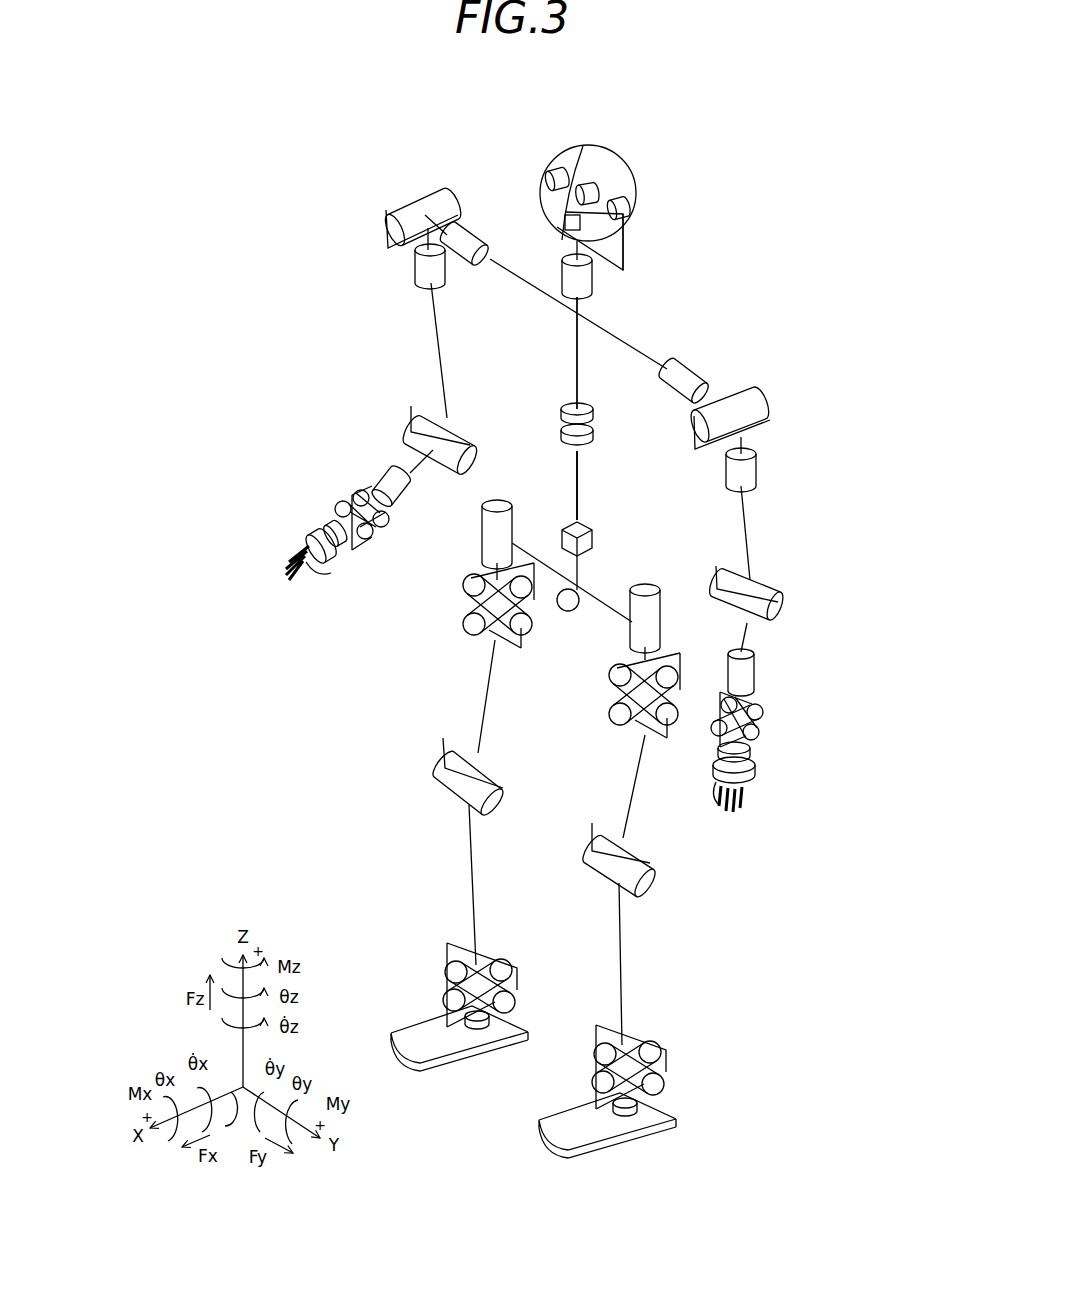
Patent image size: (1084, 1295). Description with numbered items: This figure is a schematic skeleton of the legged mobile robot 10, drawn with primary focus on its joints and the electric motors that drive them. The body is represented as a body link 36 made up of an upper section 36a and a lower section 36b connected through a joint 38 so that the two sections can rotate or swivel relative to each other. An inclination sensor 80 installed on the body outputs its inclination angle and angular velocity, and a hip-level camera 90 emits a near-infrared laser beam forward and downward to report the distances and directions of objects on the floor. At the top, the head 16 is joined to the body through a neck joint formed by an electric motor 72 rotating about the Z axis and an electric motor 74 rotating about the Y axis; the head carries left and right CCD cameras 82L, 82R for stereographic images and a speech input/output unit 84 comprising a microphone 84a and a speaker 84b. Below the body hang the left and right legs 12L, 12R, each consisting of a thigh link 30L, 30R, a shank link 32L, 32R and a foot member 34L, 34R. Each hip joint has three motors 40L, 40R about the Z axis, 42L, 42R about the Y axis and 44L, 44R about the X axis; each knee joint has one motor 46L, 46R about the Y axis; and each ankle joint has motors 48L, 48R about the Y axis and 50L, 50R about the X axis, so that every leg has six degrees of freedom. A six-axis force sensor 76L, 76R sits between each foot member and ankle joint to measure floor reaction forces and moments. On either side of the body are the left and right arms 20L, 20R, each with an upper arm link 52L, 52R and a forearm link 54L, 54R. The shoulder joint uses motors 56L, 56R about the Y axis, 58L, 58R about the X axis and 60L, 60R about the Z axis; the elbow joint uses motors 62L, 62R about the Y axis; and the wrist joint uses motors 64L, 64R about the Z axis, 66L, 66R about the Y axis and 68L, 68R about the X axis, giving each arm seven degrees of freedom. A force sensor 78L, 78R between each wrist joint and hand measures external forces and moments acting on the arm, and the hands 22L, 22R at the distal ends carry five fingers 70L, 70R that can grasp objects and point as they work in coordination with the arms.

The legged mobile robot 10 is at (718, 300).
The left leg 12L is at (682, 907).
The right leg 12R is at (412, 802).
The head 16 is at (558, 160).
The left arm 20L is at (790, 572).
The right arm 20R is at (410, 372).
The left hand 22L is at (754, 778).
The right hand 22R is at (330, 555).
The left thigh link 30L is at (632, 782).
The right thigh link 30R is at (486, 712).
The left shank link 32L is at (622, 955).
The right shank link 32R is at (470, 885).
The left foot member 34L is at (600, 1150).
The right foot member 34R is at (442, 1062).
The body link 36 is at (583, 474).
The upper section 36a is at (580, 392).
The lower section 36b is at (580, 512).
The joint 38 is at (598, 431).
The electric motor 40L is at (656, 612).
The electric motor 40R is at (506, 522).
The electric motor 42L is at (620, 678).
The electric motor 42R is at (474, 590).
The electric motor 44L is at (616, 716).
The electric motor 44R is at (472, 630).
The electric motor 46L is at (652, 883).
The electric motor 46R is at (500, 802).
The electric motor 48L is at (662, 1084).
The electric motor 48R is at (512, 1003).
The electric motor 50L is at (651, 1047).
The electric motor 50R is at (502, 964).
The left upper arm link 52L is at (750, 530).
The right upper arm link 52R is at (440, 375).
The left forearm link 54L is at (755, 640).
The right forearm link 54R is at (410, 465).
The electric motor 56L is at (688, 383).
The electric motor 56R is at (470, 250).
The electric motor 58L is at (742, 412).
The electric motor 58R is at (398, 214).
The electric motor 60L is at (752, 472).
The electric motor 60R is at (418, 272).
The electric motor 62L is at (768, 612).
The electric motor 62R is at (470, 460).
The electric motor 64L is at (757, 676).
The electric motor 64R is at (405, 493).
The electric motor 66L is at (760, 734).
The electric motor 66R is at (340, 514).
The electric motor 68L is at (764, 708).
The electric motor 68R is at (355, 496).
The fingers 70L is at (797, 806).
The fingers 70R is at (296, 569).
The electric motor 72 is at (592, 284).
The electric motor 74 is at (622, 205).
The force sensor 76L is at (633, 1114).
The force sensor 76R is at (485, 1027).
The force sensor 78L is at (750, 757).
The force sensor 78R is at (322, 528).
The inclination sensor 80 is at (597, 541).
The CCD camera 82L is at (588, 184).
The CCD camera 82R is at (543, 178).
The speech input/output unit 84 is at (612, 230).
The microphone 84a is at (626, 250).
The speaker 84b is at (560, 234).
The hip-level camera 90 is at (567, 612).